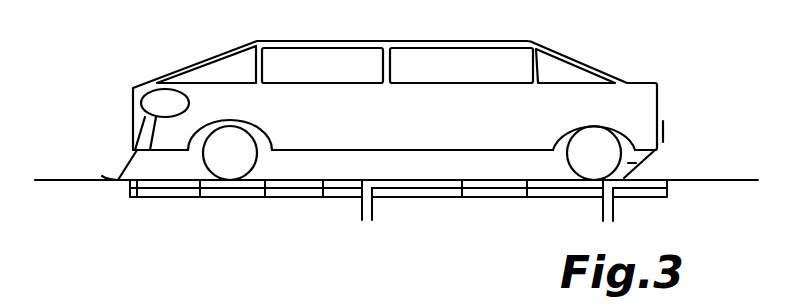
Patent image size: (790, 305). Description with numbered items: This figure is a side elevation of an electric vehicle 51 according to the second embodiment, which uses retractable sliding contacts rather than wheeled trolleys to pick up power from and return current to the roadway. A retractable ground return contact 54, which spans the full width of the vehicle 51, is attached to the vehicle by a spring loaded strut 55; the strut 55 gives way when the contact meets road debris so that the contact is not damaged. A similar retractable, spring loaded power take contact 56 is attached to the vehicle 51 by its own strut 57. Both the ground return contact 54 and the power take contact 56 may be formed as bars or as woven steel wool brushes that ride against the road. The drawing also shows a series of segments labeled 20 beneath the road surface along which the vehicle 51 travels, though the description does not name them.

The track section 20 is at (78, 182).
The vehicle 51 is at (545, 47).
The ground return contact 54 is at (638, 170).
The spring loaded strut 55 is at (653, 155).
The power take contact 56 is at (122, 172).
The strut 57 is at (140, 160).